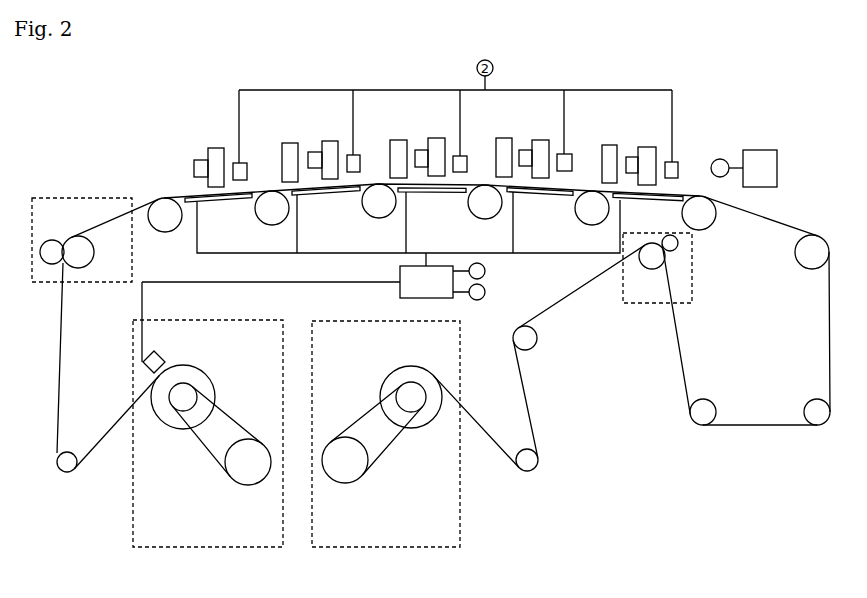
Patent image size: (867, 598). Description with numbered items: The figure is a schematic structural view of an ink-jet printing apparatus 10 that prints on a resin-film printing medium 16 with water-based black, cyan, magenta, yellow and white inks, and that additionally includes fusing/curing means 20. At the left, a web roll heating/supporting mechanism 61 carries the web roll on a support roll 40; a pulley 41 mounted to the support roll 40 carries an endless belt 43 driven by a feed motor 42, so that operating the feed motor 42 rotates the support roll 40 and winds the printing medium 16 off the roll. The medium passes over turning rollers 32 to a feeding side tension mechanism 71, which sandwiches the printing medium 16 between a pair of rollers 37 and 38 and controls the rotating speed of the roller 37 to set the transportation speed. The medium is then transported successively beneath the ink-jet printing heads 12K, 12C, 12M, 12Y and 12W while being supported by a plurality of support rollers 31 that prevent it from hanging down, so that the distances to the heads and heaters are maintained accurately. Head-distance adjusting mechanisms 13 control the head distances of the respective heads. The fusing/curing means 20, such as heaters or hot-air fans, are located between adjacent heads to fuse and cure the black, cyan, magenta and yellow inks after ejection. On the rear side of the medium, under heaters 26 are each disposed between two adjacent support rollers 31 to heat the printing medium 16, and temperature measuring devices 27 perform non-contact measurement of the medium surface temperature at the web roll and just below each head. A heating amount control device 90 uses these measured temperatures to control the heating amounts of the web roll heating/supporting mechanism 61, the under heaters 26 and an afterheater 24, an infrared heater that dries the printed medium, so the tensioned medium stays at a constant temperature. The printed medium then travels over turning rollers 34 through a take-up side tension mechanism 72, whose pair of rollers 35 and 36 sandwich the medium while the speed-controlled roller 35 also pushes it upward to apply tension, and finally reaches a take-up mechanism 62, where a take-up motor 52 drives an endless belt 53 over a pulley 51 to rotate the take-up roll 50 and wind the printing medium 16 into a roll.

The ink-jet printing apparatus 10 is at (768, 103).
The ink-jet printing head 12K is at (216, 148).
The ink-jet printing head 12C is at (330, 141).
The ink-jet printing head 12M is at (437, 138).
The ink-jet printing head 12Y is at (540, 140).
The ink-jet printing head 12W is at (647, 147).
The head-distance adjusting mechanism 13 is at (201, 160).
The printing medium 16 is at (762, 218).
The fusing/curing means 20 is at (290, 143).
The afterheater 24 is at (768, 150).
The under heater 26 is at (222, 203).
The temperature measuring device 27 is at (247, 172).
The support roller 31 is at (160, 230).
The turning roller 32 is at (60, 471).
The turning roller 34 is at (533, 347).
The roller 35 is at (647, 268).
The roller 36 is at (674, 252).
The roller 37 is at (92, 262).
The roller 38 is at (52, 240).
The support roll 40 is at (175, 402).
The pulley 41 is at (188, 384).
The feed motor 42 is at (241, 485).
The endless belt 43 is at (233, 410).
The take-up roll 50 is at (418, 405).
The pulley 51 is at (405, 383).
The take-up motor 52 is at (350, 483).
The endless belt 53 is at (360, 416).
The web roll heating/supporting mechanism 61 is at (238, 321).
The take-up mechanism 62 is at (351, 321).
The feeding side tension mechanism 71 is at (133, 270).
The take-up side tension mechanism 72 is at (692, 288).
The heating amount control device 90 is at (400, 276).